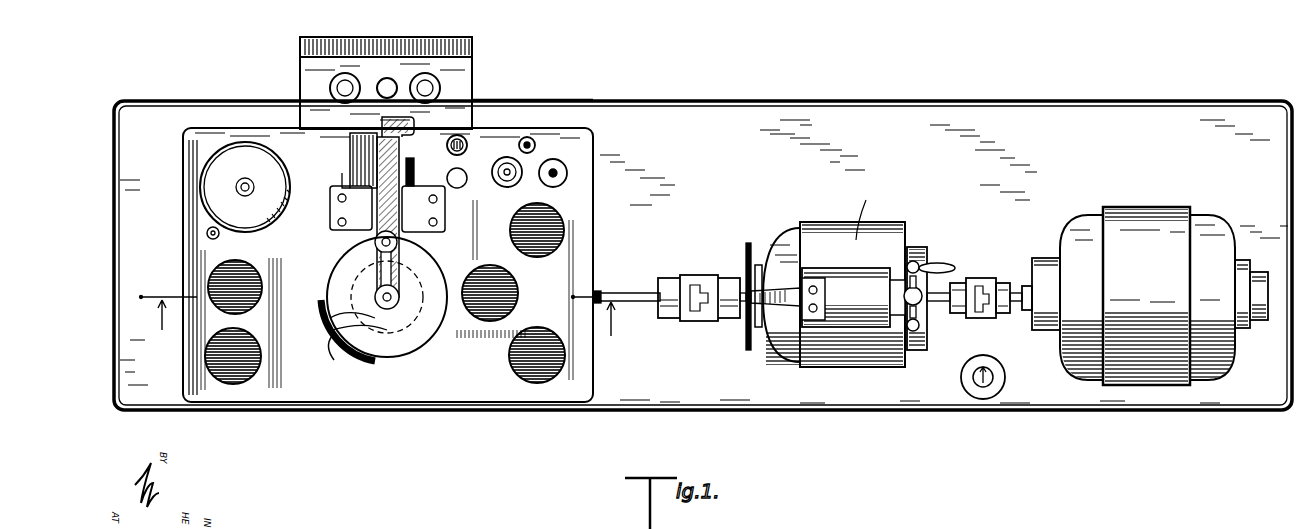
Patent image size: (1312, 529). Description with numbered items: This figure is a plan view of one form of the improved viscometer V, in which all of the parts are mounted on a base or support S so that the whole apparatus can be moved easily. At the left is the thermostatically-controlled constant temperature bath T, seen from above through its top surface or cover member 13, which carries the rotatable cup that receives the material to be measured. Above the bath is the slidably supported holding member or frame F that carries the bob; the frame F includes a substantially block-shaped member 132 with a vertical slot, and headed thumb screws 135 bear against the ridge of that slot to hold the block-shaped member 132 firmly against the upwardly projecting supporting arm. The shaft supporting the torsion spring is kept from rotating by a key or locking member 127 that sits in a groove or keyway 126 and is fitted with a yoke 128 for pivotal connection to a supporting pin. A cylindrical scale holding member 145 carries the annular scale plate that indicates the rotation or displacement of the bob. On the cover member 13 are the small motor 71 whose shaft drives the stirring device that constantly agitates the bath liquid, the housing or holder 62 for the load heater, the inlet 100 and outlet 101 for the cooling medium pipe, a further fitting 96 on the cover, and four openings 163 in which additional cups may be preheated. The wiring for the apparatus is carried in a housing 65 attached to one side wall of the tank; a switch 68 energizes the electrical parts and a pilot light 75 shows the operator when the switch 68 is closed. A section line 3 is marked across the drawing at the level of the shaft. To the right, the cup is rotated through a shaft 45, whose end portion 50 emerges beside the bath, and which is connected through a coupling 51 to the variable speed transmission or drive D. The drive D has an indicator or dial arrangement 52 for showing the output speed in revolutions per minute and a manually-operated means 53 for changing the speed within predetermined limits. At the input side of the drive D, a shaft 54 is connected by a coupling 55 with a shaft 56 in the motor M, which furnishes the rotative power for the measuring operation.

The base or support S is at (988, 106).
The constant temperature bath T is at (578, 150).
The housing 65 is at (470, 66).
The viscometer V is at (539, 93).
The holding member or frame F is at (361, 169).
The block-shaped member 132 is at (400, 137).
The headed thumb screws 135 is at (414, 168).
The yoke 128 is at (376, 240).
The key or locking member 127 is at (374, 270).
The groove or keyway 126 is at (395, 303).
The cylindrical scale holding member 145 is at (404, 342).
The small motor 71 is at (222, 165).
The inlet 100 is at (206, 233).
The openings 163 is at (260, 380).
The top surface or cover member 13 is at (372, 390).
The pilot light 75 is at (466, 142).
The outlet 101 is at (532, 140).
The housing or holder 62 is at (505, 182).
The pivot stud 96 is at (568, 173).
The section line 3- 3 is at (380, 316).
The shaft 45 is at (617, 292).
The shaft end 50 is at (597, 295).
The coupling 51 is at (692, 276).
The indicator or dial arrangement 52 is at (748, 262).
The variable speed transmission or drive D is at (840, 238).
The manually-operated means 53 is at (905, 290).
The shaft 54 is at (945, 295).
The coupling 55 is at (972, 280).
The shaft 56 is at (1026, 312).
The motor M is at (1150, 222).
The switch 68 is at (1000, 378).